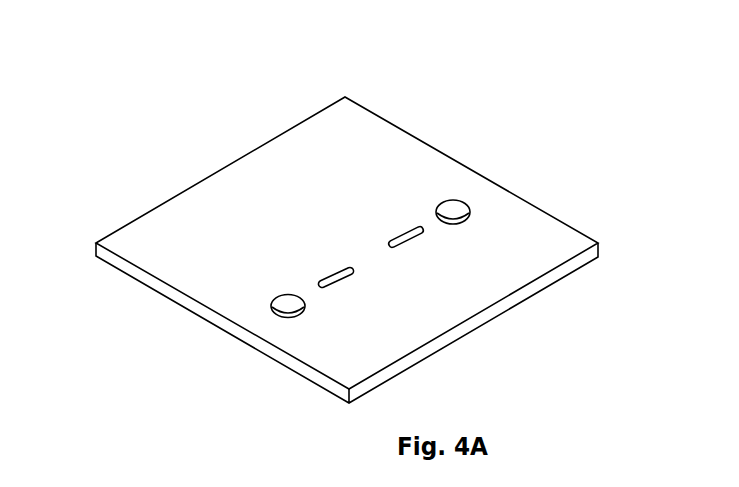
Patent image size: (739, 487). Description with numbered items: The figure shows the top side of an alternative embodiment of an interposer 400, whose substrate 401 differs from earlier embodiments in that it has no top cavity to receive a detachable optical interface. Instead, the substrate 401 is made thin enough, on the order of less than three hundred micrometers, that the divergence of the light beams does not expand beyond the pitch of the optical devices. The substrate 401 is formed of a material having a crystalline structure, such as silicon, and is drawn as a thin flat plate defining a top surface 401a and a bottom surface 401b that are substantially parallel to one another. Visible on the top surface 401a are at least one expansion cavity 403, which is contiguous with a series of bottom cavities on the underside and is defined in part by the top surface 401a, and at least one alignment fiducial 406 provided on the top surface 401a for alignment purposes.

The interposer 400 is at (175, 63).
The substrate 401 is at (155, 258).
The top surface 401a is at (205, 200).
The bottom surface 401b is at (118, 271).
The expansion cavity 403 is at (340, 280).
The alignment fiducial 406 is at (457, 205).